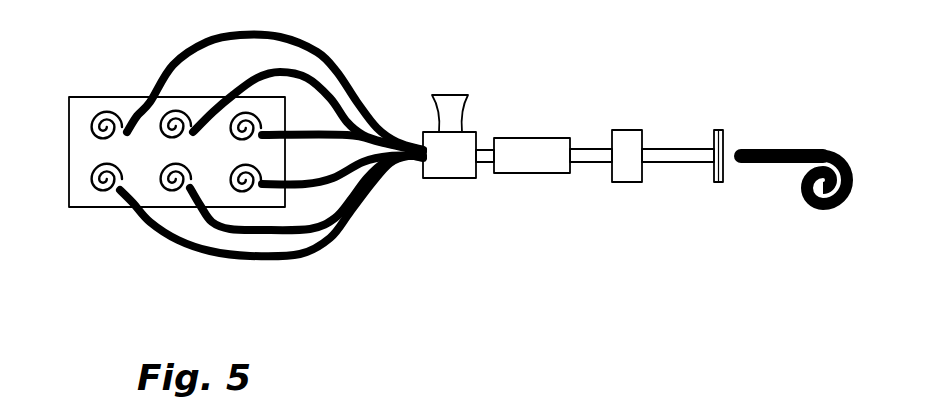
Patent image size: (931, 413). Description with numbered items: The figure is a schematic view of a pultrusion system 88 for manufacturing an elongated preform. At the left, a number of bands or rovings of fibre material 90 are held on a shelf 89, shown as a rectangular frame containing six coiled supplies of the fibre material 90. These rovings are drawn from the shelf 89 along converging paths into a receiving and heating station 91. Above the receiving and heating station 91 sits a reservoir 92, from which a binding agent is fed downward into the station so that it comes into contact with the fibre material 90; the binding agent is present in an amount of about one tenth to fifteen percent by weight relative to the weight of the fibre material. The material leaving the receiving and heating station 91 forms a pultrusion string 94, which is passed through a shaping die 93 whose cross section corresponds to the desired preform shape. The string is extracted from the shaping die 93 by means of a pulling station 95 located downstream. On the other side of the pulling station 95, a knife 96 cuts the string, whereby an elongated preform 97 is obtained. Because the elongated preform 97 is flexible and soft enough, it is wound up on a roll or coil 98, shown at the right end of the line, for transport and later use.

The sensor system 88 is at (402, 306).
The shelf 89 is at (77, 110).
The fibre material 90 is at (85, 127).
The receiving and heating station 91 is at (448, 162).
The reservoir 92 is at (447, 100).
The shaping die 93 is at (540, 162).
The pultrusion string 94 is at (484, 165).
The pulling station 95 is at (625, 140).
The knife 96 is at (725, 137).
The elongated preform 97 is at (772, 165).
The roll or coil 98 is at (832, 203).